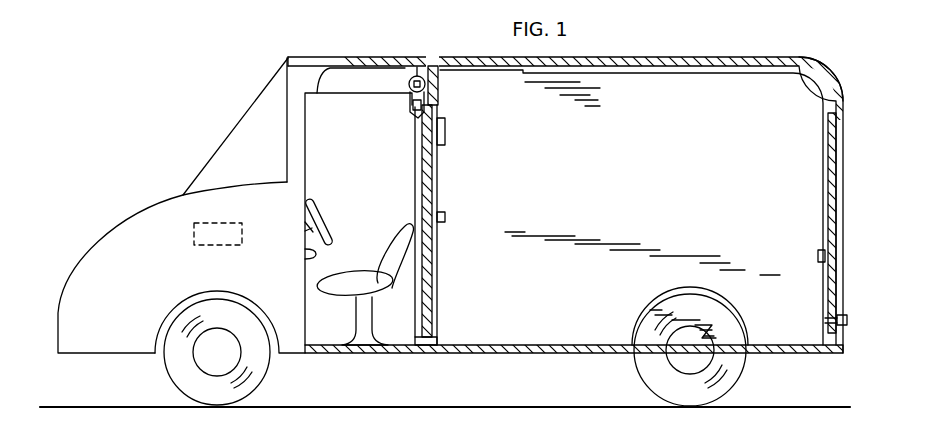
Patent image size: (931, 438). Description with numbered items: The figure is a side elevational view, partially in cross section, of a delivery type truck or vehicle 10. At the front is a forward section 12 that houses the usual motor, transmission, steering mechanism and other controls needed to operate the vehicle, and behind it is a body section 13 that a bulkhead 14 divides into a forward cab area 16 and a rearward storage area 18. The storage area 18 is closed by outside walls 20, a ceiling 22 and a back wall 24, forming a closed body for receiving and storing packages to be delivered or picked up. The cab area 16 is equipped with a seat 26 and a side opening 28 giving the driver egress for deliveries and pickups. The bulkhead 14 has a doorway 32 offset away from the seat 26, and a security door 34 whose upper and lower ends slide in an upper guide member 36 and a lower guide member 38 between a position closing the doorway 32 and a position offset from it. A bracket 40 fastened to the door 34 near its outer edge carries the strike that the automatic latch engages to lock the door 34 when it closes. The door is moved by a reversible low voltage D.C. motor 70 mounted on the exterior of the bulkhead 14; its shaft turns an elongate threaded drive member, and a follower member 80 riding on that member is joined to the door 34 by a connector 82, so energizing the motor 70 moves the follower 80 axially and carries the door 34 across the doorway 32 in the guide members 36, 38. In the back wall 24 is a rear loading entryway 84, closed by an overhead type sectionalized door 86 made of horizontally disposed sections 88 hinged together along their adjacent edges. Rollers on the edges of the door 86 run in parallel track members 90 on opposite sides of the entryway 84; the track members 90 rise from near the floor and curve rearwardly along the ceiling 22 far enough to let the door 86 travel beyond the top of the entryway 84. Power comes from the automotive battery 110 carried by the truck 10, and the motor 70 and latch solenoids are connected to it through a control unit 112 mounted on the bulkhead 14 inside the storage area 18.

The delivery truck 10 is at (288, 56).
The forward section 12 is at (158, 256).
The body section 13 is at (430, 56).
The bulkhead 14 is at (455, 59).
The forward cab area 16 is at (342, 206).
The rearward storage area 18 is at (591, 206).
The outside walls 20 is at (712, 93).
The ceiling 22 is at (660, 63).
The back wall 24 is at (843, 97).
The seat 26 is at (358, 280).
The opening 28 is at (306, 254).
The doorway 32 is at (438, 165).
The security door 34 is at (425, 157).
The upper guide member 36 is at (412, 100).
The lower guide member 38 is at (418, 338).
The bracket 40 is at (445, 217).
The D.C. motor 70 is at (413, 77).
The follower member 80 is at (425, 83).
The connector 82 is at (411, 115).
The entryway 84 is at (840, 315).
The sectionalized door 86 is at (831, 148).
The door sections 88 is at (828, 212).
The track members 90 is at (650, 71).
The automotive battery 110 is at (216, 223).
The control unit 112 is at (445, 130).